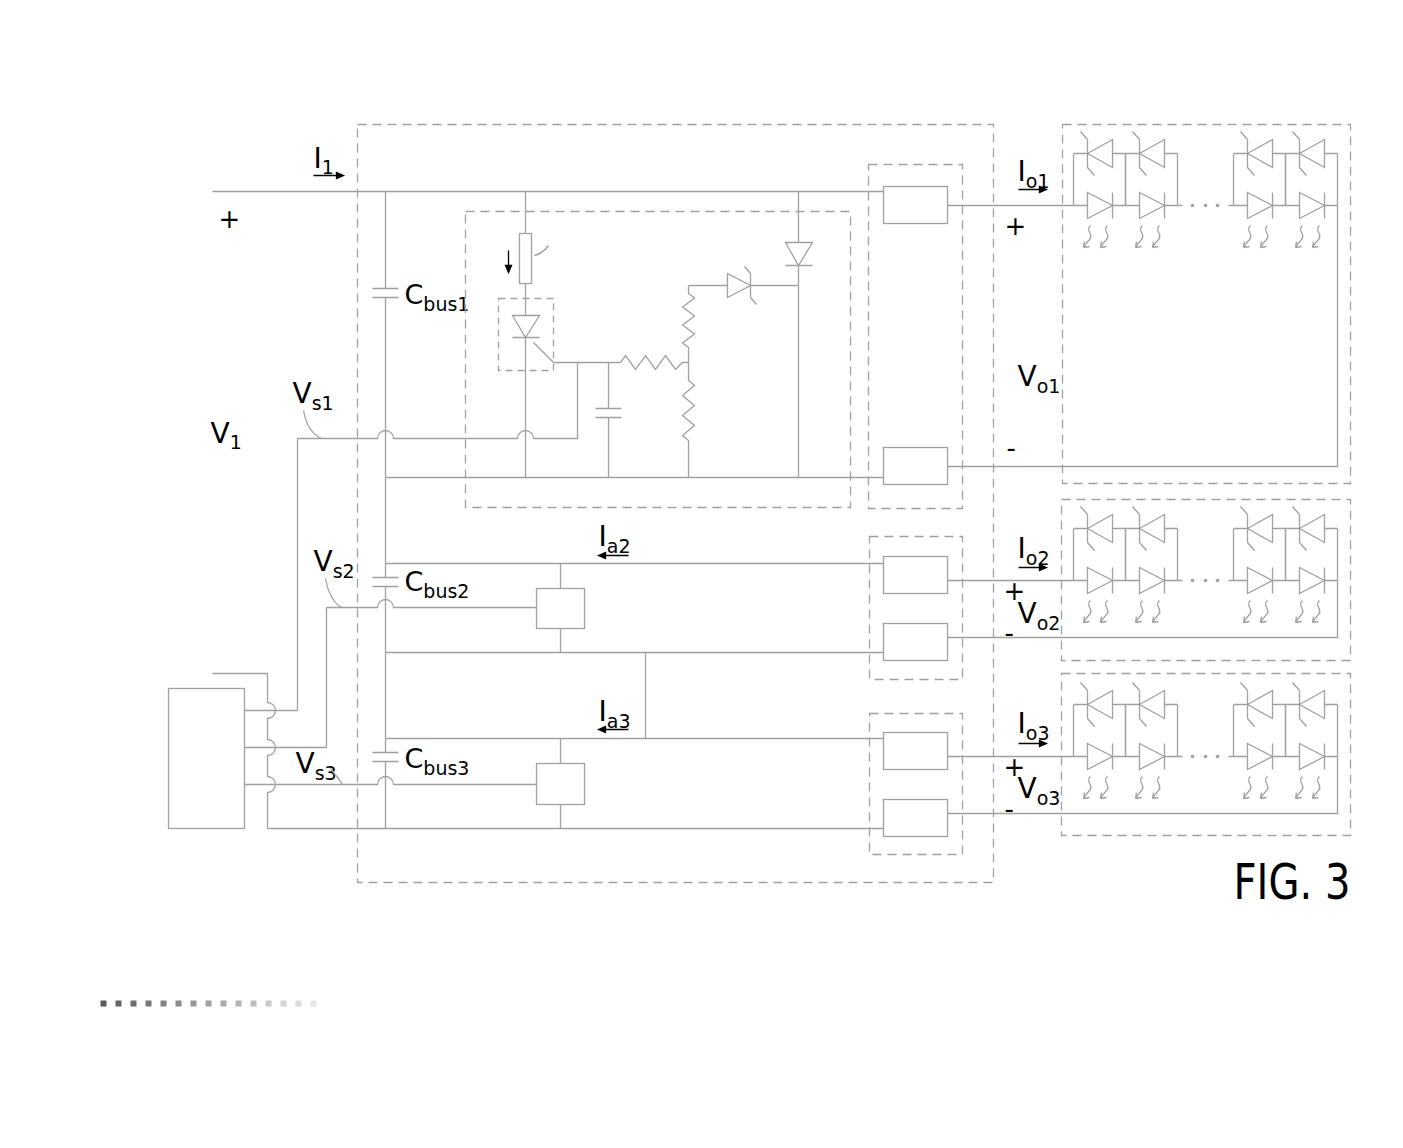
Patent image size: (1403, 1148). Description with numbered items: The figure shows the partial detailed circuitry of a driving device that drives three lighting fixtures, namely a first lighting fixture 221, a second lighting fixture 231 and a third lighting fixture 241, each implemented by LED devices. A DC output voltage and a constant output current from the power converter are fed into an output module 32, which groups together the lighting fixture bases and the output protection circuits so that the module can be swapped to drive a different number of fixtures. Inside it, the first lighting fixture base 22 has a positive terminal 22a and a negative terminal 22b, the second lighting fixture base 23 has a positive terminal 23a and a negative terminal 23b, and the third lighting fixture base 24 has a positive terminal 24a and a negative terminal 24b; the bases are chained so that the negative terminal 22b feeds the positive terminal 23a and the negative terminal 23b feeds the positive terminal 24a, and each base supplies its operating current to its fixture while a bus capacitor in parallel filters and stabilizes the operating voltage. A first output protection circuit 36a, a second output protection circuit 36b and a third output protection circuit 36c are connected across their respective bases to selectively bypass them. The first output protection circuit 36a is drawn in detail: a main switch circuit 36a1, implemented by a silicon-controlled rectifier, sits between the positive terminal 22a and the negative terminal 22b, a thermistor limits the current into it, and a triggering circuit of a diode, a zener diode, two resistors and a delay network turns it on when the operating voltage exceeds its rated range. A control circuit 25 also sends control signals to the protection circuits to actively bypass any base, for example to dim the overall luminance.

The output module 32 is at (357, 236).
The first output protection circuit 36a is at (568, 210).
The main switch circuit 36a1 is at (553, 322).
The second output protection circuit 36b is at (561, 608).
The third output protection circuit 36c is at (561, 784).
The first lighting fixture base 22 is at (868, 185).
The positive terminal 22a is at (916, 205).
The negative terminal 22b is at (916, 466).
The second lighting fixture base 23 is at (869, 656).
The positive terminal 23a is at (916, 575).
The negative terminal 23b is at (916, 642).
The third lighting fixture base 24 is at (869, 832).
The positive terminal 24a is at (916, 751).
The negative terminal 24b is at (916, 818).
The control circuit 25 is at (193, 688).
The first lighting fixture 221 is at (1352, 292).
The second lighting fixture 231 is at (1352, 578).
The third lighting fixture 241 is at (1352, 753).